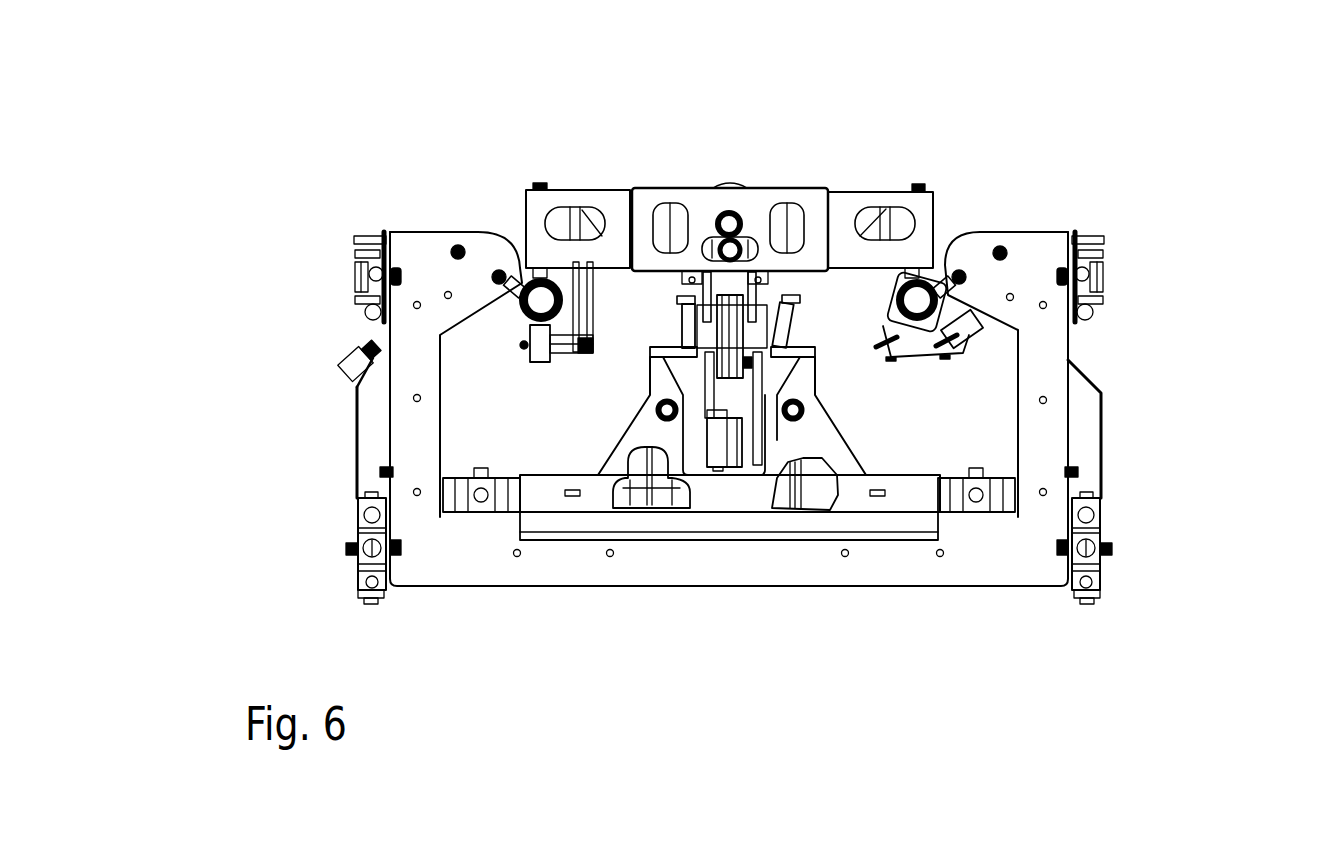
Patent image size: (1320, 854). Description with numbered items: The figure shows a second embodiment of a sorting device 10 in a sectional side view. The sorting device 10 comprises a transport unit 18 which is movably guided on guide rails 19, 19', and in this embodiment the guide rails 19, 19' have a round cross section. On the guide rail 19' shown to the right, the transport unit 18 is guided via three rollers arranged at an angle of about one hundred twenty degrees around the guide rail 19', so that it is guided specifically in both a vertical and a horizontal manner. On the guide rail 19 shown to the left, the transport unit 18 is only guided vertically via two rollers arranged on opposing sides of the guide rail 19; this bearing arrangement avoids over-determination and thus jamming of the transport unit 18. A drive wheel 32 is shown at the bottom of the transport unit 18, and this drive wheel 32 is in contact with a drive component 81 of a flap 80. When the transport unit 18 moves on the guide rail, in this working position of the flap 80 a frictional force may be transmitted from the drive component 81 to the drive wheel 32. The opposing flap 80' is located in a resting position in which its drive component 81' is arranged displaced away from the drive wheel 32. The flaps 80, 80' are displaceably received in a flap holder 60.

The sorting device 10 is at (277, 167).
The transport unit 18 is at (620, 212).
The guide rail 19 is at (507, 261).
The guide rail 19' is at (952, 243).
The drive wheel 32 is at (753, 395).
The flap holder 60 is at (618, 463).
The flap 80 is at (511, 411).
The flap 80' is at (1036, 411).
The drive component 81 is at (487, 353).
The drive component 81' is at (1012, 345).